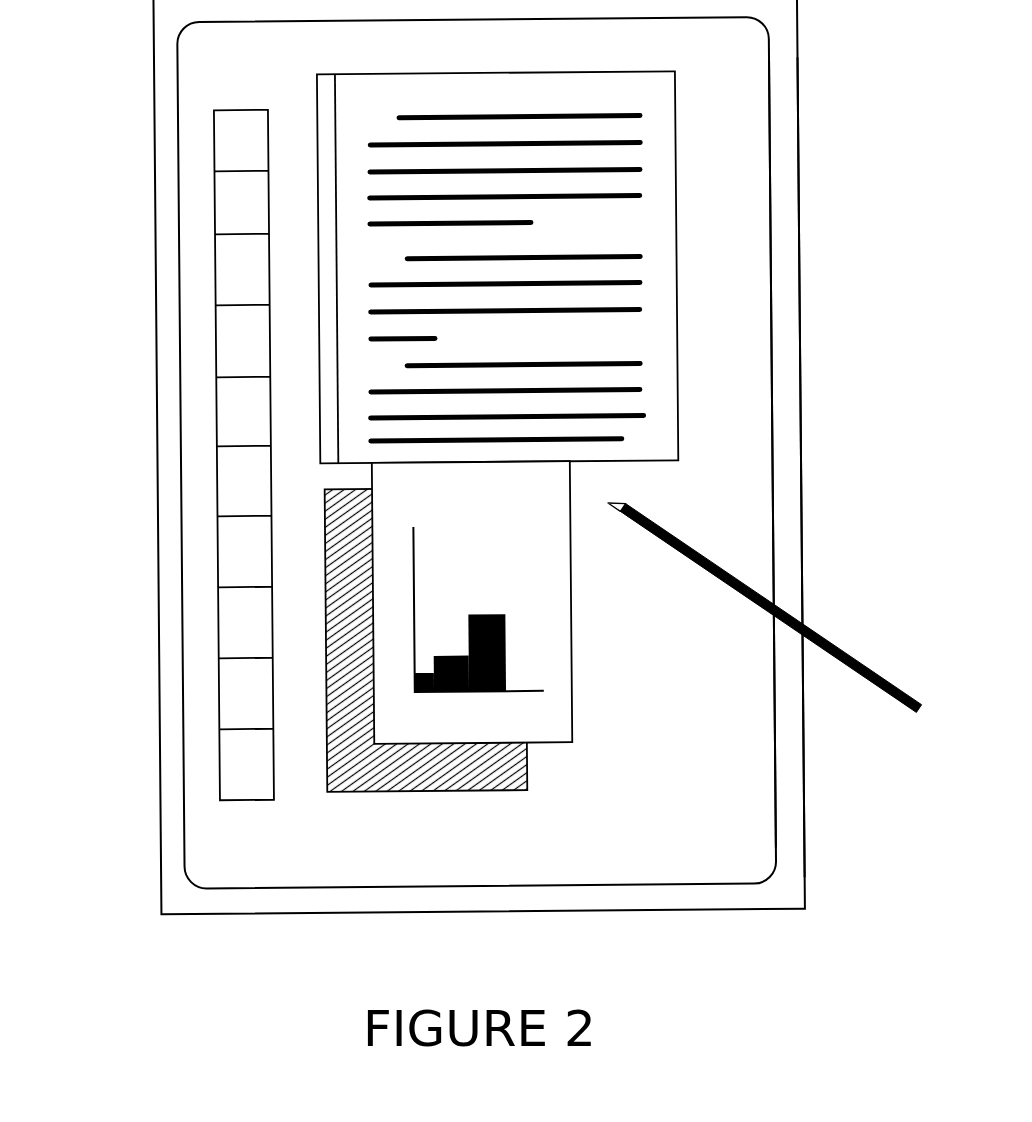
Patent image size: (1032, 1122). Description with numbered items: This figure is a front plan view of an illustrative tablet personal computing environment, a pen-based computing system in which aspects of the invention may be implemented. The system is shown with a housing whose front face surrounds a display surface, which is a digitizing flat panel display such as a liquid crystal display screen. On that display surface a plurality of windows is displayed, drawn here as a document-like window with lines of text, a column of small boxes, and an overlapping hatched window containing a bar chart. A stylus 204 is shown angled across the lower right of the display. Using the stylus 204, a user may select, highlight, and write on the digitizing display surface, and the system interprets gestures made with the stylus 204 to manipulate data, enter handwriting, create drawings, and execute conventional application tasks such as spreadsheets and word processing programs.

The stylus 204 is at (838, 672).